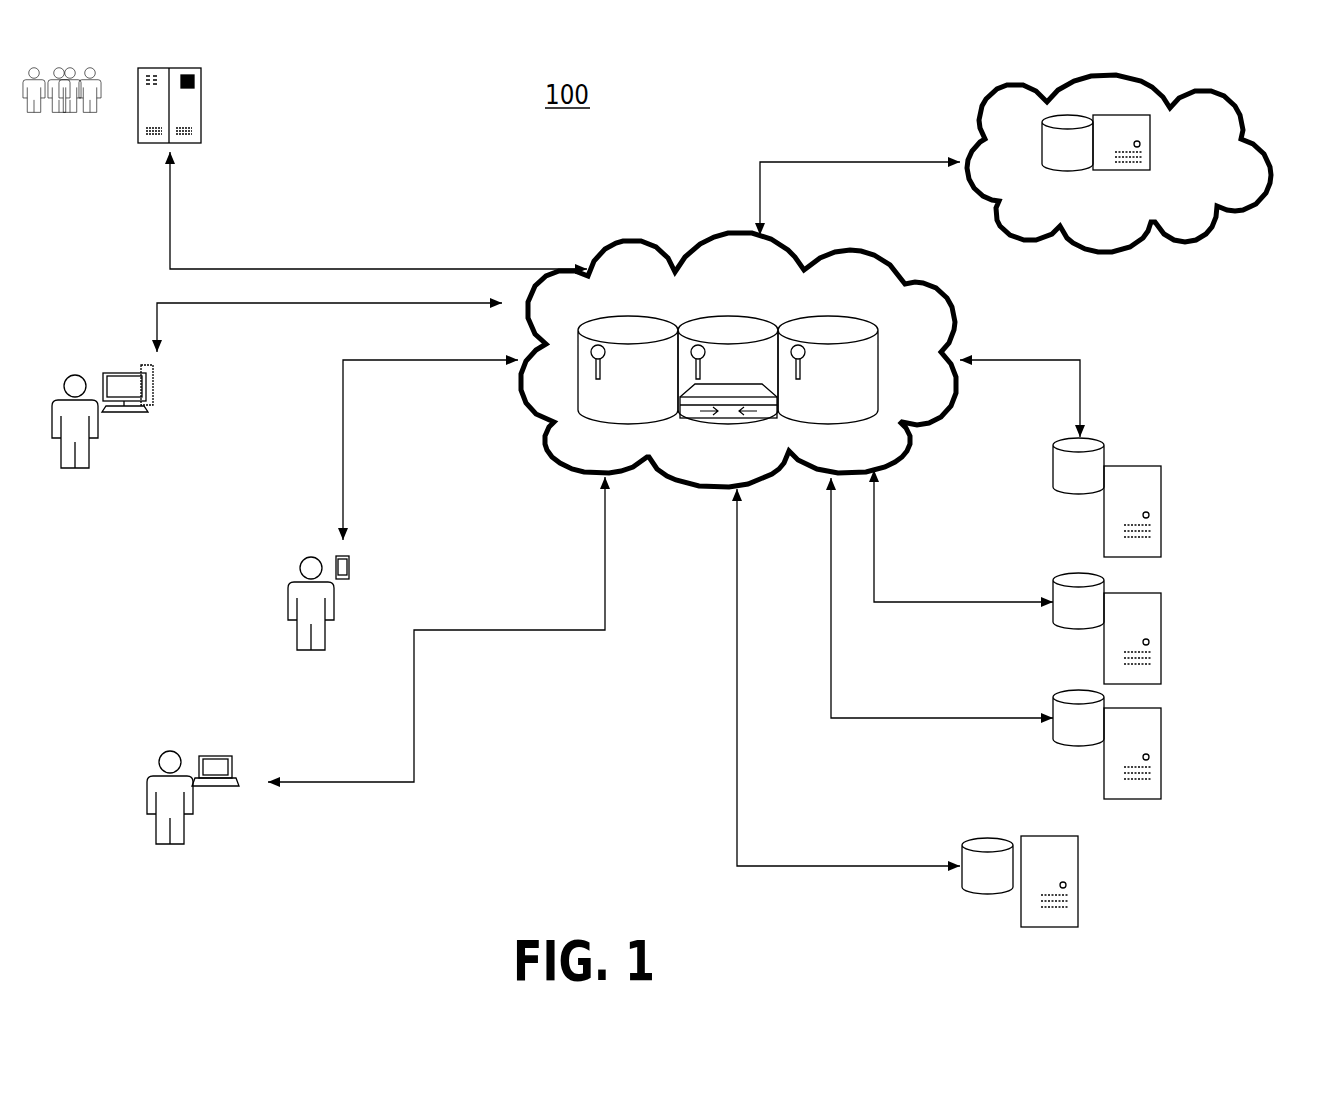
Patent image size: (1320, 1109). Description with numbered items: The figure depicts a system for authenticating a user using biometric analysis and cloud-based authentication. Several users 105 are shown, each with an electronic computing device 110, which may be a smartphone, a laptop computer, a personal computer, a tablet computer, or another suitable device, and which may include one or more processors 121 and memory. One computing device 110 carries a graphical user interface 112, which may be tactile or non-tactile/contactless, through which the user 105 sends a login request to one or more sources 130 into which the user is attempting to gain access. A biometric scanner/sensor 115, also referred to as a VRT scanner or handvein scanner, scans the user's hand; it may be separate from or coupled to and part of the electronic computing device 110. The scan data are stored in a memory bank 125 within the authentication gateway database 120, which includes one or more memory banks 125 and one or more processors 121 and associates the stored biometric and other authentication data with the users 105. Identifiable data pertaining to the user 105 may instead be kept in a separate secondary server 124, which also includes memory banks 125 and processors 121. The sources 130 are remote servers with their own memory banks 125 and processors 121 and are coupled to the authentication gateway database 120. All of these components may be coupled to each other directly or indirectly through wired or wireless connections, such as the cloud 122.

The user 105 is at (64, 113).
The electronic computing device 110 is at (180, 143).
The graphical user interface 112 is at (347, 574).
The biometric scanner/sensor 115 is at (194, 80).
The authentication gateway database 120 is at (765, 431).
The processor 121 is at (690, 418).
The cloud 122 is at (957, 318).
The server 124 is at (1106, 182).
The memory bank 125 is at (643, 311).
The source 130 is at (1122, 452).